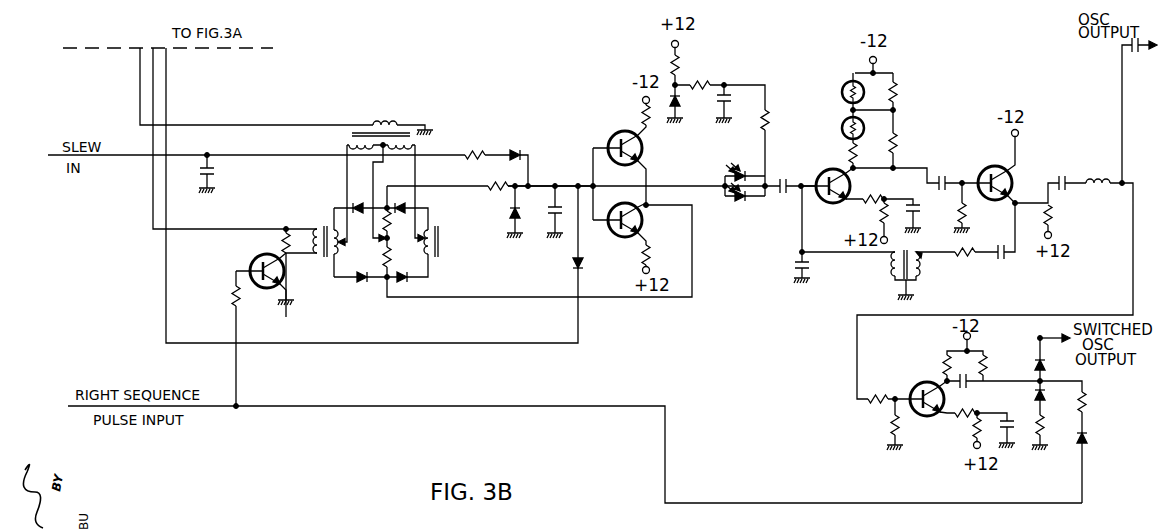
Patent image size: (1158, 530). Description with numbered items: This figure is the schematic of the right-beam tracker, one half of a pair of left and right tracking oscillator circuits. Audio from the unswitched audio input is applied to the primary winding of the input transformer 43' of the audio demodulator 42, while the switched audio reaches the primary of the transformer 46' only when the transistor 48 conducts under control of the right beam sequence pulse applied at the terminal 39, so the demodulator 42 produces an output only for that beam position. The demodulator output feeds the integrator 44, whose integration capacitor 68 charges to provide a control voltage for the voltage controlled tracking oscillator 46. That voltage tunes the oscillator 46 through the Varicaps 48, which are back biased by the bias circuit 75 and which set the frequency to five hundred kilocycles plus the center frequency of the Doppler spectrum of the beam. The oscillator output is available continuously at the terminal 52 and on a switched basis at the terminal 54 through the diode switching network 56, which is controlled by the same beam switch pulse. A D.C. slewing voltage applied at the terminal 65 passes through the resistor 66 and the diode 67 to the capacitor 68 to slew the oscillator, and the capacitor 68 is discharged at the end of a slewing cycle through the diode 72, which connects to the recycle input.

The terminal 39 is at (66, 402).
The audio demodulator 42 is at (368, 265).
The input transformer 43' is at (363, 135).
The integrator 44 is at (576, 177).
The tracking oscillator 46 is at (853, 185).
The input transformer 46' is at (317, 228).
The Varicaps 48 is at (255, 262).
The terminal 52 is at (1150, 52).
The terminal 54 is at (1053, 336).
The diode switching network 56 is at (1074, 426).
The terminal 65 is at (47, 152).
The resistor 66 is at (483, 163).
The diode 67 is at (520, 152).
The integration capacitor 68 is at (535, 212).
The diode 72 is at (575, 265).
The bias circuit 75 is at (733, 71).